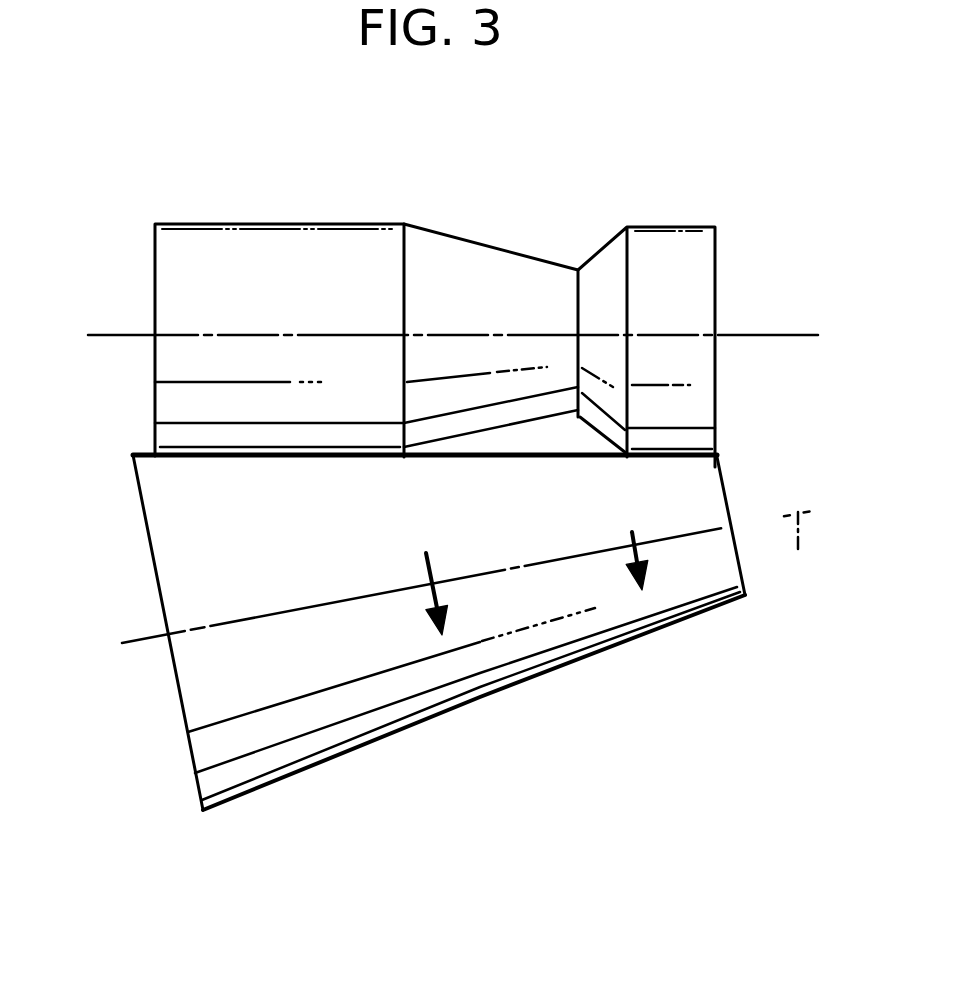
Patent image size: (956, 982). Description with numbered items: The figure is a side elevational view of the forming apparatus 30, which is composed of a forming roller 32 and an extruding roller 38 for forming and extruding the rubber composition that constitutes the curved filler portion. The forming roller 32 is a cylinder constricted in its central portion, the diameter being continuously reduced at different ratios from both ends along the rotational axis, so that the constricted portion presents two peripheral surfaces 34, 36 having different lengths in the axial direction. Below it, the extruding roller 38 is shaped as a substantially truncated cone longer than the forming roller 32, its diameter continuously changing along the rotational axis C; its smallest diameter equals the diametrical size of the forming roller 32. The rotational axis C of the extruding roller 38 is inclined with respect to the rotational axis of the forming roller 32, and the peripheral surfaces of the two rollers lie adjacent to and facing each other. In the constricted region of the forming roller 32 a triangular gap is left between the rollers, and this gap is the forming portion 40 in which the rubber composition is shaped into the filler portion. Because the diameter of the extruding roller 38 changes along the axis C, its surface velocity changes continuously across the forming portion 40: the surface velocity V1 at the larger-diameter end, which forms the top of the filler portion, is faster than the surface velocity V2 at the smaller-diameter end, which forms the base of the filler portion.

The forming apparatus 30 is at (702, 180).
The forming roller 32 is at (373, 260).
The peripheral surface 34 is at (507, 251).
The peripheral surface 36 is at (594, 250).
The extruding roller 38 is at (198, 755).
The forming portion 40 is at (560, 430).
The rotational axis C is at (800, 553).
The surface velocity V1 is at (428, 597).
The surface velocity V2 is at (630, 553).